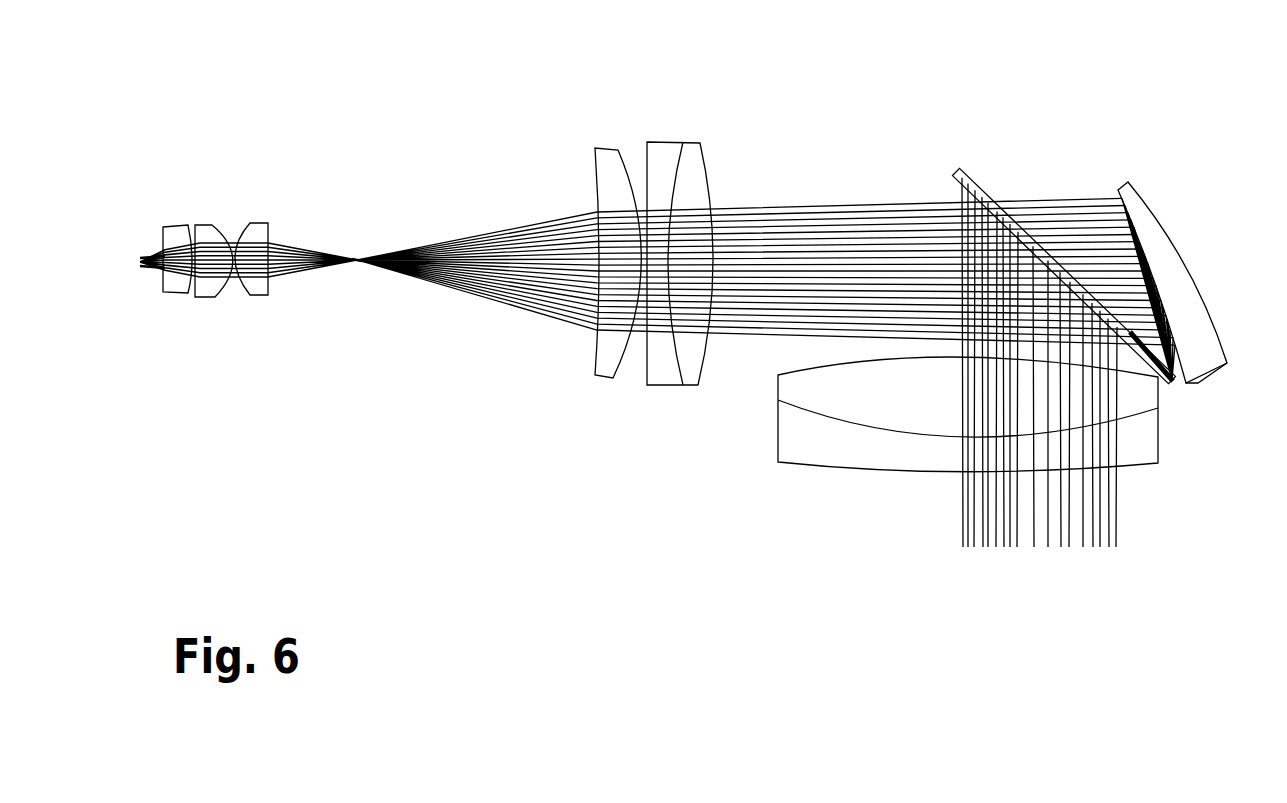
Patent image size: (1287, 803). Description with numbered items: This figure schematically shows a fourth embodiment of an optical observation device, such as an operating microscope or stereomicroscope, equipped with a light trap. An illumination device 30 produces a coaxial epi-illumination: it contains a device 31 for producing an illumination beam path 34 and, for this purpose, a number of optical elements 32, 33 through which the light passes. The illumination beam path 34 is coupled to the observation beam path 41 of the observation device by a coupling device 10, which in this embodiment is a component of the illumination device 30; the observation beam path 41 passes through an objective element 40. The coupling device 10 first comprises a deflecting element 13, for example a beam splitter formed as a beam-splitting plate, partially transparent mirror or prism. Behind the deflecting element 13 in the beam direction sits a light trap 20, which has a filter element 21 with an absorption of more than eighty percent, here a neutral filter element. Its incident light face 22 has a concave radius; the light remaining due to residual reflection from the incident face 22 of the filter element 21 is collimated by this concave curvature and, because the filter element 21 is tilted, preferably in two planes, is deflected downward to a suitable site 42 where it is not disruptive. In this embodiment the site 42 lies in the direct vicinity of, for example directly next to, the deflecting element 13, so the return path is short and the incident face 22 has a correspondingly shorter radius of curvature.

The coupling device 10 is at (1062, 290).
The deflecting element 13 is at (955, 170).
The light trap 20 is at (1195, 266).
The filter element 21 is at (1160, 218).
The incident light face 22 is at (1193, 368).
The illumination device 30 is at (766, 198).
The device for producing an illumination beam path 31 is at (387, 213).
The optical element 32 is at (213, 200).
The optical element 33 is at (635, 127).
The illumination beam path 34 is at (810, 238).
The objective element 40 is at (837, 438).
The observation beam path 41 is at (1002, 558).
The site 42 is at (1160, 380).